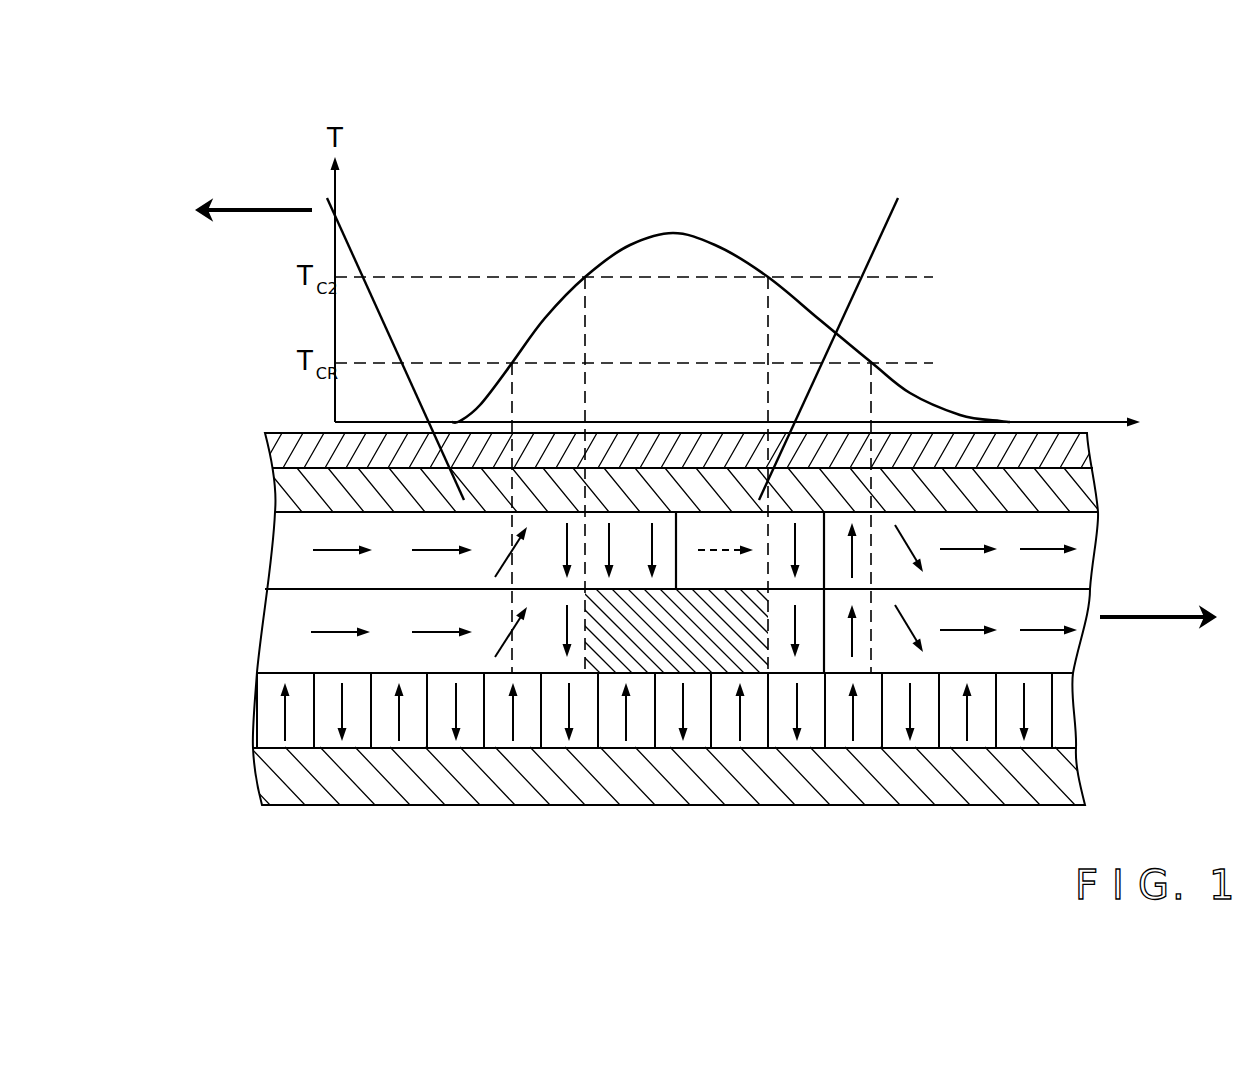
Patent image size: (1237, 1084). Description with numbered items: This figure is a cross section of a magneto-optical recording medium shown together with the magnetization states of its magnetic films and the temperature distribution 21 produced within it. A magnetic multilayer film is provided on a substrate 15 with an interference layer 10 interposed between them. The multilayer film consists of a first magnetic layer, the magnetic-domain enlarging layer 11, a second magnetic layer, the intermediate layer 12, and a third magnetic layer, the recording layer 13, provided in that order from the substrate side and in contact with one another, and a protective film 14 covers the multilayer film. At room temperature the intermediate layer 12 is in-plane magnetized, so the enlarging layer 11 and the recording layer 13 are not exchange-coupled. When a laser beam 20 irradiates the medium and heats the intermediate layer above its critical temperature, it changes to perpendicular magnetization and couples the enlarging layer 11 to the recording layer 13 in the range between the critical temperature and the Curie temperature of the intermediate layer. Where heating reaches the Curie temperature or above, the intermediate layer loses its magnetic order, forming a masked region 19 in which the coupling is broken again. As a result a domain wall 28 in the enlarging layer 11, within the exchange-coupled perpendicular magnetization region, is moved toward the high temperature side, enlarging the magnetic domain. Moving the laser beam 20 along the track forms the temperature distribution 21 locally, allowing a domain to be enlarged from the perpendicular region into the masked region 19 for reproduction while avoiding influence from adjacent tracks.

The interference layer 10 is at (287, 500).
The first magnetic layer (magnetic-domain enlarging layer) 11 is at (287, 553).
The second magnetic layer (intermediate layer) 12 is at (275, 635).
The third magnetic layer (recording layer) 13 is at (268, 717).
The protective film 14 is at (273, 790).
The substrate 15 is at (283, 450).
The masked region 19 is at (715, 662).
The laser beam 20 is at (850, 237).
The temperature distribution 21 is at (677, 232).
The domain wall 28 is at (675, 572).